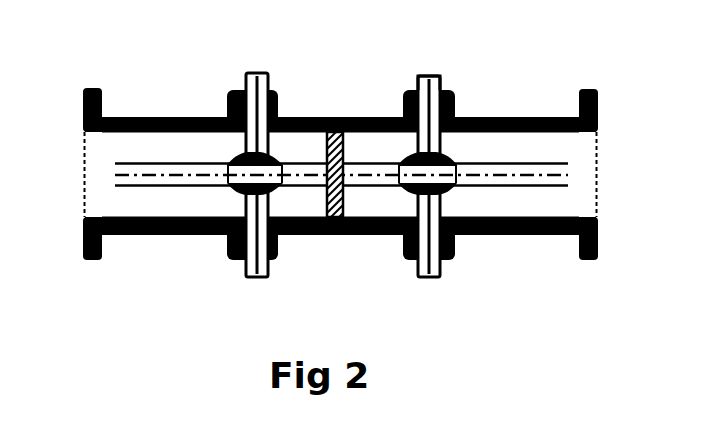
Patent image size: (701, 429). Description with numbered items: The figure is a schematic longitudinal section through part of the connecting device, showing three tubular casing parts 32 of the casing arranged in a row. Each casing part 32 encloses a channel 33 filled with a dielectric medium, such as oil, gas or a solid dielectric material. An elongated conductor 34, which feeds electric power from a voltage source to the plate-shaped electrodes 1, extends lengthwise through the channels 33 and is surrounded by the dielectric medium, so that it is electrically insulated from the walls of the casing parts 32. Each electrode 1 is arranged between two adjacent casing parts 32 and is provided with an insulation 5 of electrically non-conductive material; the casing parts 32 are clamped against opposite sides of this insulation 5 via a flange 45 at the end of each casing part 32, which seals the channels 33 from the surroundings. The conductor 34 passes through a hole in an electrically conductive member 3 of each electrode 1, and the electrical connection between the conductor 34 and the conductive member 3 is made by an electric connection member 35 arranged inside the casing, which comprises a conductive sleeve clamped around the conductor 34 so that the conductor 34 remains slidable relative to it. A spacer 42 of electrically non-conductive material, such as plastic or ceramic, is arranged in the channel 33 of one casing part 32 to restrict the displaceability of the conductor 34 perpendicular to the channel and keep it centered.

The electrode 1 is at (265, 287).
The conductive member 3 is at (422, 74).
The insulation 5 is at (443, 80).
The casing part 32 is at (168, 117).
The channel 33 is at (122, 146).
The conductor 34 is at (142, 177).
The electric connection member 35 is at (453, 196).
The spacer 42 is at (347, 235).
The flange 45 is at (228, 98).